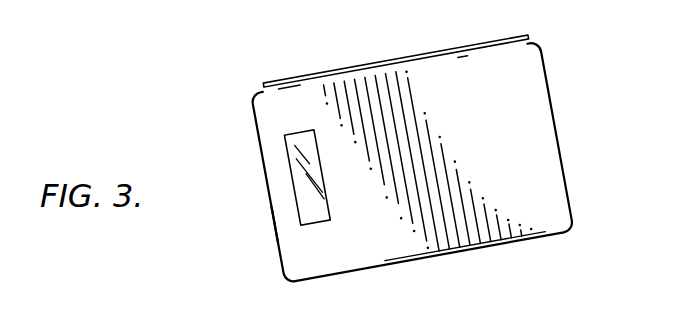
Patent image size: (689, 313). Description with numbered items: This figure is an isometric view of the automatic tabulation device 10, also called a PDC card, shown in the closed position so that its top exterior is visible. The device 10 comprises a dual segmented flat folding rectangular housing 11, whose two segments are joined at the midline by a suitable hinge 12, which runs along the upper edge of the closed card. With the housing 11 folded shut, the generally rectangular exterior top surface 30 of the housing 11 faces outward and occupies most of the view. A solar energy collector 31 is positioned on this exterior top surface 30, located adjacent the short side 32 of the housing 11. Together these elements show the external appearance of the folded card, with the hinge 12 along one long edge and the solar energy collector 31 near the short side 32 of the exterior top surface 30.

The automatic tabulation device 10 is at (240, 148).
The housing 11 is at (548, 85).
The hinge 12 is at (403, 56).
The exterior top surface 30 is at (541, 166).
The solar energy collector 31 is at (290, 163).
The short side 32 is at (275, 222).